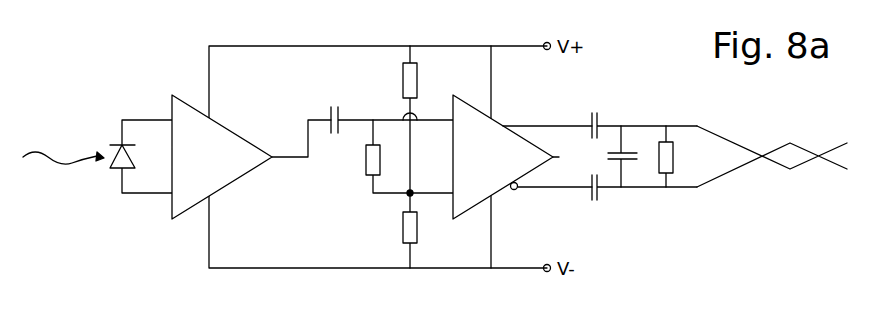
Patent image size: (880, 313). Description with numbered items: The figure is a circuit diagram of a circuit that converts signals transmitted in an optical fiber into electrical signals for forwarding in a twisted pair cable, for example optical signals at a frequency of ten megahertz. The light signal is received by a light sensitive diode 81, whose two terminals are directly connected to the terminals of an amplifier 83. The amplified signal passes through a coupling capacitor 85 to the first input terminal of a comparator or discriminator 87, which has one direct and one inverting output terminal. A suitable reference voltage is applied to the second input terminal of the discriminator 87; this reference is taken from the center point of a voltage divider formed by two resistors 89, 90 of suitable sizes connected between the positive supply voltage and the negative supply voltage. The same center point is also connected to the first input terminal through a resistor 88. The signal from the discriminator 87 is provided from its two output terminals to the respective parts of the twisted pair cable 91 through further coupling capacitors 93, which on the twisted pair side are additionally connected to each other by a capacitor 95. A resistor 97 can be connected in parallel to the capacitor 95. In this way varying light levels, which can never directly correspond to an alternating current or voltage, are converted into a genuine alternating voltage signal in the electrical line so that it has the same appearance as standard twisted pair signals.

The light sensitive diode 81 is at (113, 170).
The amplifier 83 is at (186, 93).
The coupling capacitor 85 is at (330, 109).
The comparator or discriminator 87 is at (469, 99).
The resistor 88 is at (366, 160).
The resistor 89 is at (403, 76).
The resistor 90 is at (403, 228).
The twisted pair cable 91 is at (800, 147).
The further coupling capacitors 93 is at (597, 121).
The capacitor 95 is at (608, 157).
The resistor 97 is at (674, 160).